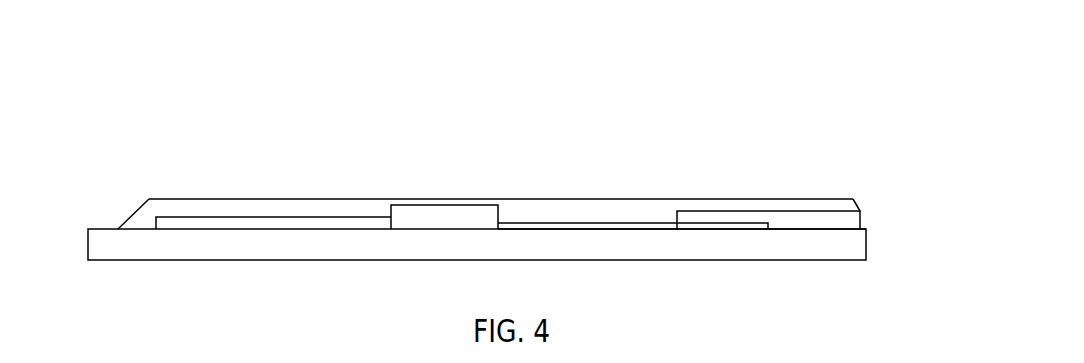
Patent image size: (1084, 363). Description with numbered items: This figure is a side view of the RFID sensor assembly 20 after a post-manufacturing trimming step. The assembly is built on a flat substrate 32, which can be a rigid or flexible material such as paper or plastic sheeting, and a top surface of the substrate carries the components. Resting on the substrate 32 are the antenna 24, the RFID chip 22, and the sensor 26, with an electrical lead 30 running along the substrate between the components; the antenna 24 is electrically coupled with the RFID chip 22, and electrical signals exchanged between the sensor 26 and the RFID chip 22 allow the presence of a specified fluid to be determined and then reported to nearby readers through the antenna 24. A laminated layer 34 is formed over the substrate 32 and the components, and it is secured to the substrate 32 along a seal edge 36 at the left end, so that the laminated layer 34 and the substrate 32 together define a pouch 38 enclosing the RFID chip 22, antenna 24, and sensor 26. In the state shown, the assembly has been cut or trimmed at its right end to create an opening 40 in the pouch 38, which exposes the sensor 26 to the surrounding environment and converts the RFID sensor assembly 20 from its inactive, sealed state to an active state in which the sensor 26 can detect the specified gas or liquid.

The RFID sensor assembly 20 is at (229, 136).
The RFID chip 22 is at (443, 217).
The antenna 24 is at (275, 222).
The sensor 26 is at (722, 217).
The electrical lead 30 is at (633, 227).
The substrate 32 is at (178, 240).
The laminated layer 34 is at (353, 199).
The seal edge 36 is at (108, 228).
The pouch 38 is at (587, 210).
The opening 40 is at (865, 207).